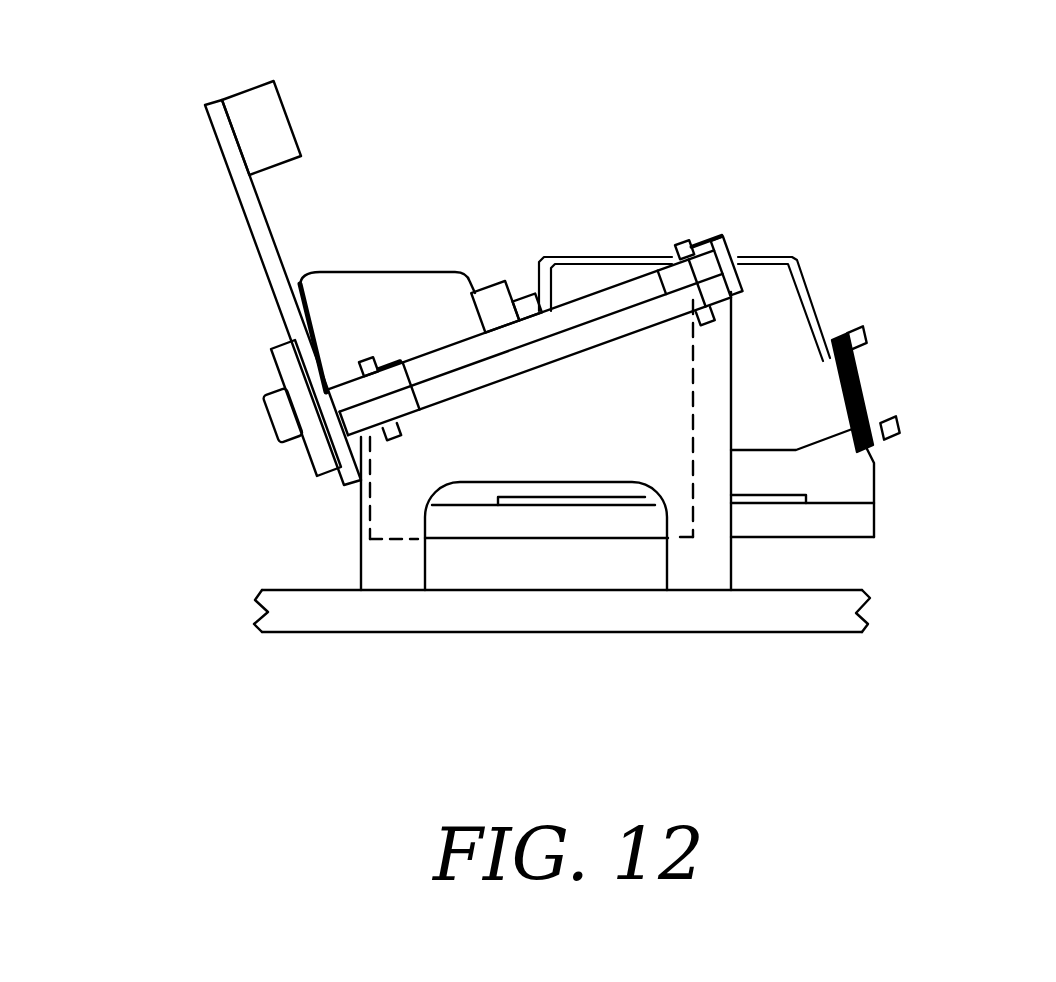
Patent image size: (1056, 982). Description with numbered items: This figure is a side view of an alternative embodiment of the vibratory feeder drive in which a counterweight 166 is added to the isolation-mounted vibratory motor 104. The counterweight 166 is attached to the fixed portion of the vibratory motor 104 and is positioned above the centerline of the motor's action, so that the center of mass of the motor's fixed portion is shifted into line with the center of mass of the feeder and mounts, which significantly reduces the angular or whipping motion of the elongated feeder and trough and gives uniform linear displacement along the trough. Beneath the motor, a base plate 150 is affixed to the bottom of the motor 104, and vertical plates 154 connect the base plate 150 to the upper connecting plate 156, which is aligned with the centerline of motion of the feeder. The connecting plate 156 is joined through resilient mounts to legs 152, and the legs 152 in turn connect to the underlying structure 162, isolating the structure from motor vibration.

The vibratory motor 104 is at (421, 298).
The base plate 150 is at (881, 465).
The legs 152 is at (520, 534).
The vertical plates 154 is at (603, 514).
The connecting plate 156 is at (713, 259).
The underlying structure 162 is at (577, 418).
The counterweight 166 is at (245, 254).